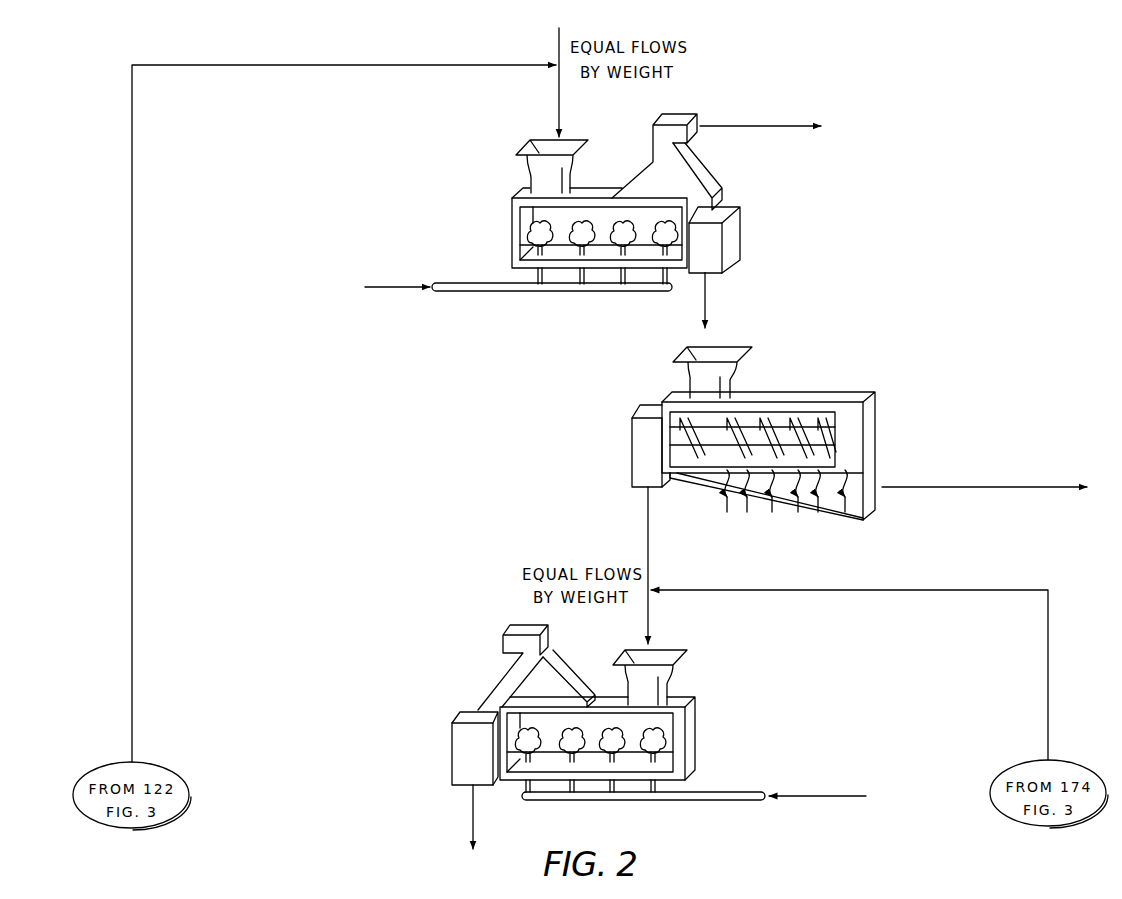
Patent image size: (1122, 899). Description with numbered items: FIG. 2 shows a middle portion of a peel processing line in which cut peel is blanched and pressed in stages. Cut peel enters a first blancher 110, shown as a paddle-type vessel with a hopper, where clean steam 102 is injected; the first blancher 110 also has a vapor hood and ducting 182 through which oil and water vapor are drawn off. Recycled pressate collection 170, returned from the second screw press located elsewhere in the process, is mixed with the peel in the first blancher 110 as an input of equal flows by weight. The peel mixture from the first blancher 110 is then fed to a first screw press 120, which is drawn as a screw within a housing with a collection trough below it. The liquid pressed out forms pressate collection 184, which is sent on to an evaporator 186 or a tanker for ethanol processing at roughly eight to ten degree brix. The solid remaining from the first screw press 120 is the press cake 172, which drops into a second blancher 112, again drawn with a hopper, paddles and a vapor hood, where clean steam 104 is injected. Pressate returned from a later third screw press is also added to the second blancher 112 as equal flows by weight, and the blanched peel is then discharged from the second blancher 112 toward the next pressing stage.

The clean steam 102 is at (397, 288).
The clean steam 104 is at (818, 798).
The first blancher 110 is at (737, 228).
The second blancher 112 is at (450, 742).
The first screw press 120 is at (807, 392).
The pressate collection 170 is at (132, 462).
The press cake 172 is at (647, 530).
The vapor hood and ducting 182 is at (753, 128).
The pressate collection 184 is at (857, 528).
The evaporator 186 is at (1027, 488).